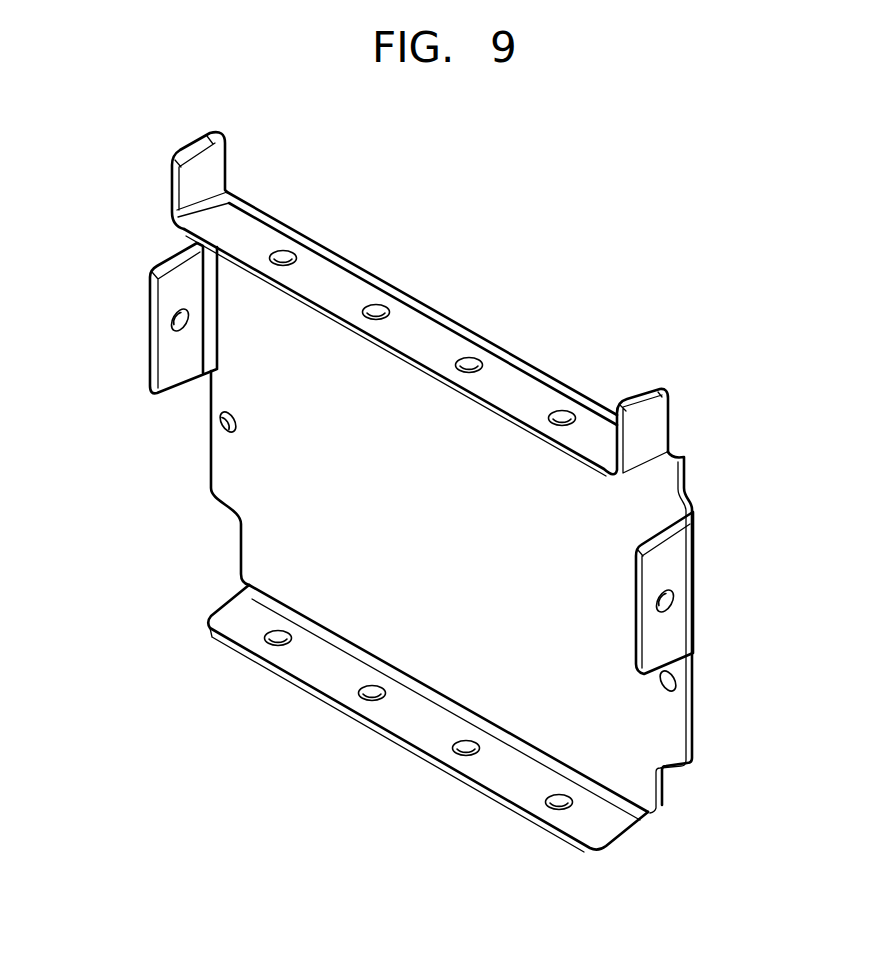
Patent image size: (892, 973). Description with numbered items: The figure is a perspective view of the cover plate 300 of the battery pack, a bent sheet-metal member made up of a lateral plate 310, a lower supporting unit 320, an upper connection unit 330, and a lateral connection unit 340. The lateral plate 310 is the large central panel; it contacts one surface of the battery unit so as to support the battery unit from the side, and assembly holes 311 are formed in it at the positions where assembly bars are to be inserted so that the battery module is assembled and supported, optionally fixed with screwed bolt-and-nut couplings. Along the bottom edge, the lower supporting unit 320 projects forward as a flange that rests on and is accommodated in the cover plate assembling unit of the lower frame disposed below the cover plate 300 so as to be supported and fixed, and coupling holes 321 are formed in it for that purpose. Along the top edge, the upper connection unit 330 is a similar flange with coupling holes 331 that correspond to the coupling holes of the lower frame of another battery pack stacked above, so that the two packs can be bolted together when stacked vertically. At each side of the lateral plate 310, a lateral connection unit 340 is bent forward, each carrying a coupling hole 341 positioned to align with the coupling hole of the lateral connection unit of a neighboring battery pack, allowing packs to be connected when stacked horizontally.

The cover plate 300 is at (548, 268).
The lateral plate 310 is at (292, 517).
The assembly holes 311 is at (224, 424).
The lower supporting unit 320 is at (412, 717).
The coupling holes 321 is at (278, 636).
The upper connection unit 330 is at (332, 282).
The coupling holes 331 is at (285, 256).
The lateral connection unit 340 is at (165, 293).
The coupling hole 341 is at (176, 322).